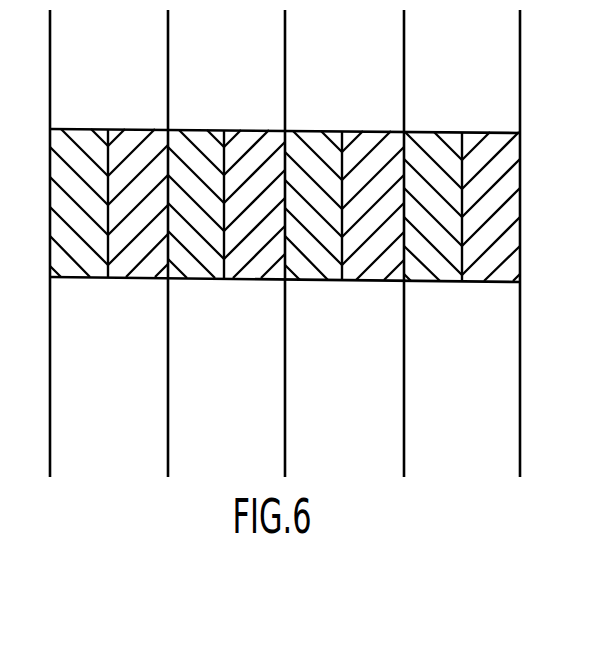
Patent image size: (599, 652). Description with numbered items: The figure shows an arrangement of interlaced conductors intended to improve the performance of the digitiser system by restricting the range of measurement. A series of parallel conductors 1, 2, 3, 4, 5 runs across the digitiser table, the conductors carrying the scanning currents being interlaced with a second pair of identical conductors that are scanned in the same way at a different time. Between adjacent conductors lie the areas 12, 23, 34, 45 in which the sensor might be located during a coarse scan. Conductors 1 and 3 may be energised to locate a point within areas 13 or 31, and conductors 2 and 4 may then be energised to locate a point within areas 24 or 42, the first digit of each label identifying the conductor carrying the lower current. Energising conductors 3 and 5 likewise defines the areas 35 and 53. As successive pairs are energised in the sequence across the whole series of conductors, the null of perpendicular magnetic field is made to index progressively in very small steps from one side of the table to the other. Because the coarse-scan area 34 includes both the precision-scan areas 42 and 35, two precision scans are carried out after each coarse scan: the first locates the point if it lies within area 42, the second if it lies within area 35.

The conductor 1 is at (50, 408).
The conductor 2 is at (168, 408).
The conductor 3 is at (285, 408).
The conductor 4 is at (404, 408).
The conductor 5 is at (520, 408).
The area 12 is at (109, 186).
The area 23 is at (226, 186).
The area 34 is at (344, 188).
The area 45 is at (462, 188).
The area 13 is at (148, 278).
The area 31 is at (188, 277).
The area 24 is at (249, 277).
The area 42 is at (315, 278).
The area 35 is at (368, 279).
The area 53 is at (430, 279).